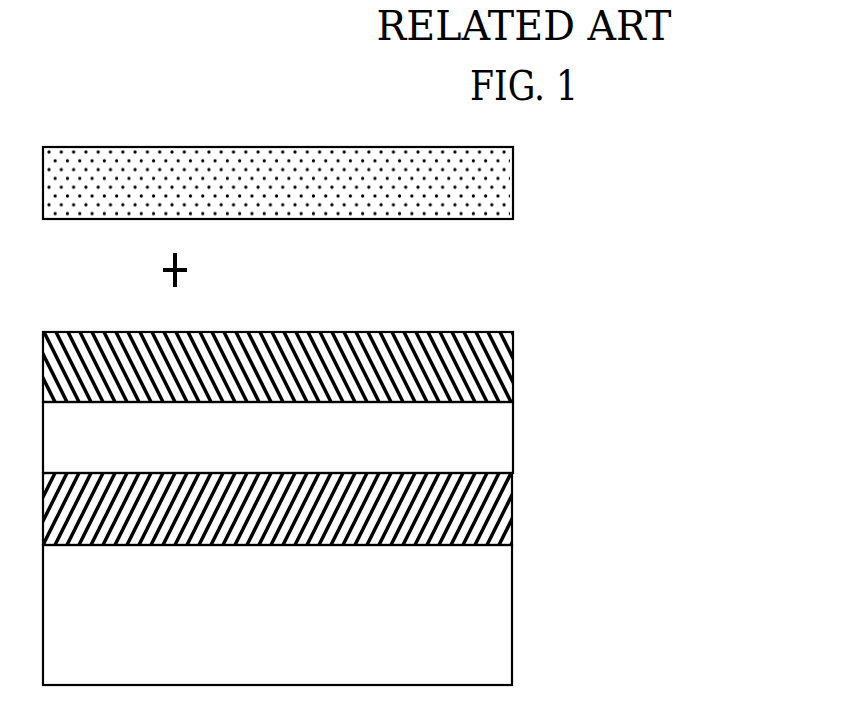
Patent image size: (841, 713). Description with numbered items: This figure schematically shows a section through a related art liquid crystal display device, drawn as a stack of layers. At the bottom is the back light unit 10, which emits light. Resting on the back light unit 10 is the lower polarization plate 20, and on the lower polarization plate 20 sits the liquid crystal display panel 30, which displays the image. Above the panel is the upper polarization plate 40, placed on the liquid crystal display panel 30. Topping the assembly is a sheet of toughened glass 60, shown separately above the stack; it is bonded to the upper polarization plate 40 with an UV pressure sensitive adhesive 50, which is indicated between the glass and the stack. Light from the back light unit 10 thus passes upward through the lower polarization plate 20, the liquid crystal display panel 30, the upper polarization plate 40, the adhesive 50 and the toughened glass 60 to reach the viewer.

The back light unit 10 is at (468, 643).
The lower polarization plate 20 is at (477, 520).
The liquid crystal display panel 30 is at (468, 440).
The upper polarization plate 40 is at (485, 353).
The UV pressure sensitive adhesive 50 is at (635, 273).
The sheet of toughened glass 60 is at (468, 173).